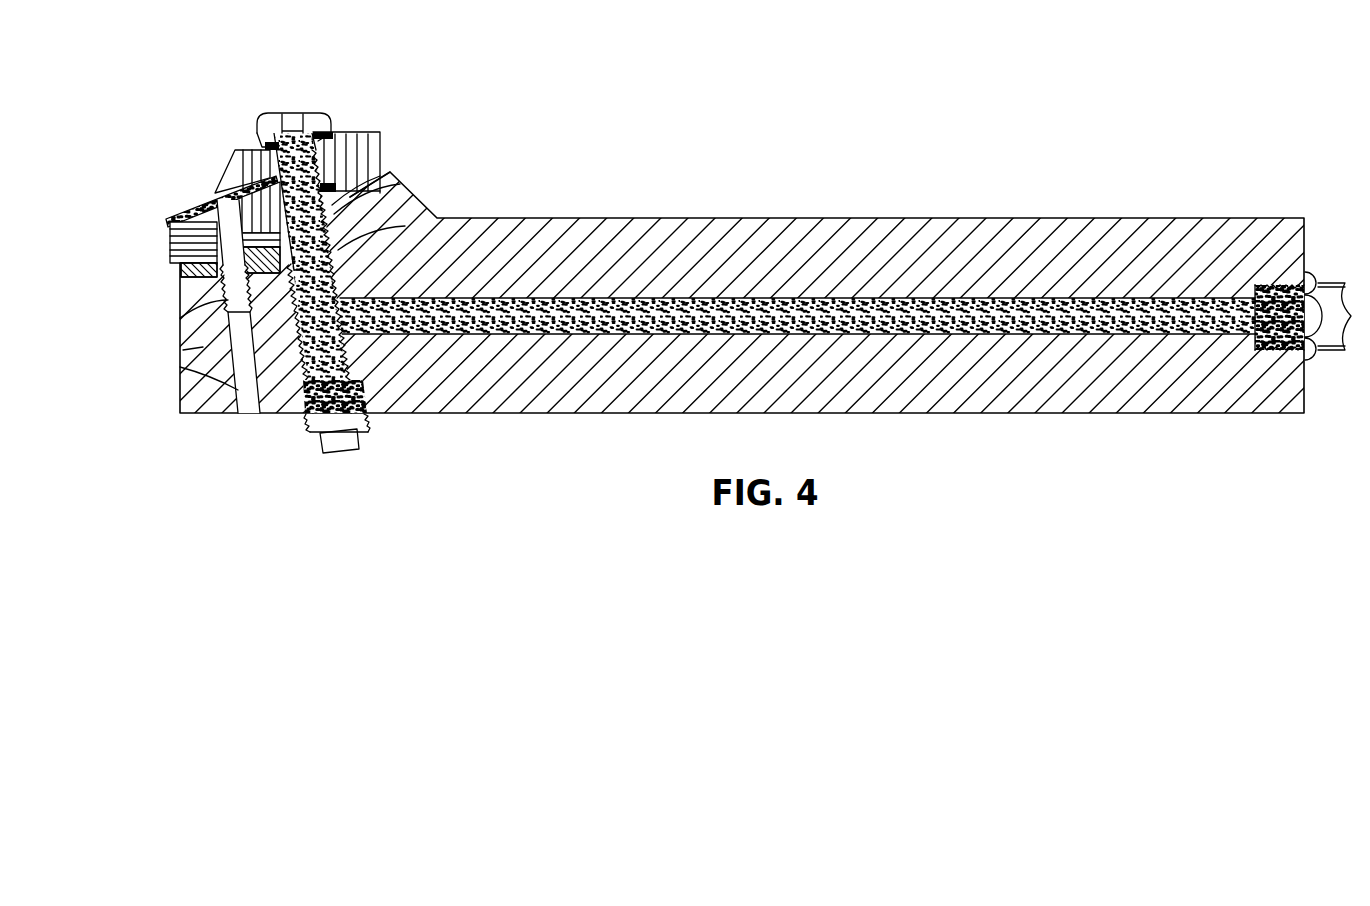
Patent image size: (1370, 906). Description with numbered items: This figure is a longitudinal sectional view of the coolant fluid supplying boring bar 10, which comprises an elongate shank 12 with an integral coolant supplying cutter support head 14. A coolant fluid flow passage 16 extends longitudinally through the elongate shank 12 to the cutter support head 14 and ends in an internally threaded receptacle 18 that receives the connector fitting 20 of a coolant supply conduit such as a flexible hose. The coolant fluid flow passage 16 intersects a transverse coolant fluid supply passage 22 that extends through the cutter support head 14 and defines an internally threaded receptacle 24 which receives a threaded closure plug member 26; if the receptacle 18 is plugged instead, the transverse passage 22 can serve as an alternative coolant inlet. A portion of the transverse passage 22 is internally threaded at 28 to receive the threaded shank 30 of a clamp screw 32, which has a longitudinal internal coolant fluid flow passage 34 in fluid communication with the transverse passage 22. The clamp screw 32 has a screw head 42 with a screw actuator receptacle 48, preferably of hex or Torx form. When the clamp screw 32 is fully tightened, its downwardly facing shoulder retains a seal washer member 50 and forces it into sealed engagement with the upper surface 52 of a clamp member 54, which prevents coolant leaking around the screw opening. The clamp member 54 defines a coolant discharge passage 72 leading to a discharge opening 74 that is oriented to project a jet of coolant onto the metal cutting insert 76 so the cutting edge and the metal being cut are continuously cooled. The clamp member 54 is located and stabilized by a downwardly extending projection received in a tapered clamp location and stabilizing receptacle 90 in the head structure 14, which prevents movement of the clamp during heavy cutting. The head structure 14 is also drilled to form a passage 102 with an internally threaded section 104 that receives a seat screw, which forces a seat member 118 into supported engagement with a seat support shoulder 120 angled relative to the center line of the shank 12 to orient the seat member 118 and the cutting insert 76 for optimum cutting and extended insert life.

The boring bar 10 is at (745, 62).
The elongate shank 12 is at (903, 218).
The cutter support head 14 is at (203, 347).
The coolant fluid flow passage 16 is at (1287, 347).
The internally threaded receptacle 18 is at (1338, 288).
The connector fitting 20 is at (1130, 307).
The transverse coolant fluid supply passage 22 is at (272, 400).
The internally threaded receptacle 24 is at (370, 403).
The threaded closure plug member 26 is at (340, 440).
The internally threaded section 28 is at (393, 226).
The threaded shank 30 is at (400, 193).
The clamp screw 32 is at (265, 117).
The longitudinal internal coolant fluid flow passage 34 is at (385, 250).
The screw head 42 is at (327, 113).
The screw actuator receptacle 48 is at (297, 112).
The seal washer member 50 is at (262, 142).
The upper surface 52 is at (353, 133).
The clamp member 54 is at (373, 147).
The coolant discharge passage 72 is at (233, 172).
The discharge opening 74 is at (237, 183).
The metal cutting insert 76 is at (183, 243).
The clamp location and stabilizing receptacle 90 is at (380, 167).
The passage 102 is at (250, 390).
The internally threaded section 104 is at (180, 317).
The seat member 118 is at (180, 267).
The seat support shoulder 120 is at (185, 285).